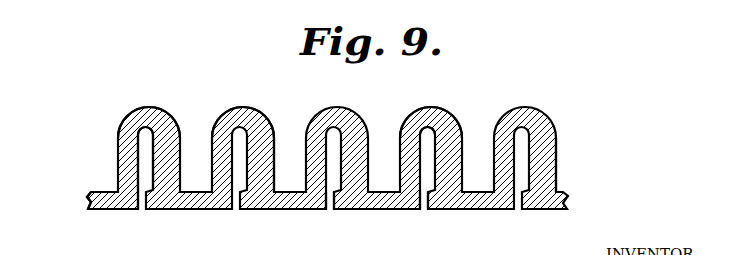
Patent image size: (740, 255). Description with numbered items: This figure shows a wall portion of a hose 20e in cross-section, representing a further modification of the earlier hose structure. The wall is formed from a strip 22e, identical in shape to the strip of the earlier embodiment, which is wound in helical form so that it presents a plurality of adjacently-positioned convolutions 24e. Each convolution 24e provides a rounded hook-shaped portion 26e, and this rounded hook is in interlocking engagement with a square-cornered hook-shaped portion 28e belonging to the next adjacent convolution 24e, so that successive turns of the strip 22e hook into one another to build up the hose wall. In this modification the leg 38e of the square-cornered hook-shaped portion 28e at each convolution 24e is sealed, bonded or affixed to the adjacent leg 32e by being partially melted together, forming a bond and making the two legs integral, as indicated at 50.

The hose 20e is at (584, 108).
The strip 22e is at (90, 201).
The convolutions 24e is at (328, 211).
The rounded hook-shaped portion 26e is at (165, 101).
The square-cornered hook-shaped portion 28e is at (202, 211).
The leg 32e is at (272, 143).
The leg 38e is at (155, 160).
The bond 50 is at (414, 120).